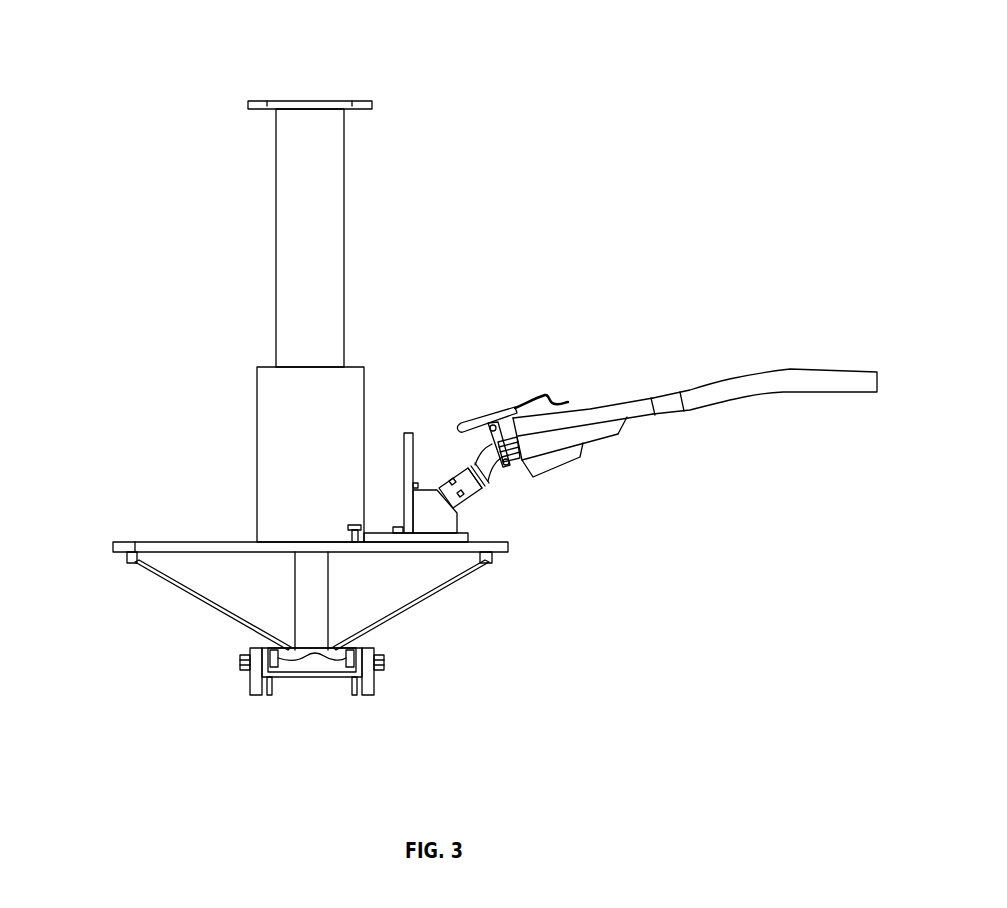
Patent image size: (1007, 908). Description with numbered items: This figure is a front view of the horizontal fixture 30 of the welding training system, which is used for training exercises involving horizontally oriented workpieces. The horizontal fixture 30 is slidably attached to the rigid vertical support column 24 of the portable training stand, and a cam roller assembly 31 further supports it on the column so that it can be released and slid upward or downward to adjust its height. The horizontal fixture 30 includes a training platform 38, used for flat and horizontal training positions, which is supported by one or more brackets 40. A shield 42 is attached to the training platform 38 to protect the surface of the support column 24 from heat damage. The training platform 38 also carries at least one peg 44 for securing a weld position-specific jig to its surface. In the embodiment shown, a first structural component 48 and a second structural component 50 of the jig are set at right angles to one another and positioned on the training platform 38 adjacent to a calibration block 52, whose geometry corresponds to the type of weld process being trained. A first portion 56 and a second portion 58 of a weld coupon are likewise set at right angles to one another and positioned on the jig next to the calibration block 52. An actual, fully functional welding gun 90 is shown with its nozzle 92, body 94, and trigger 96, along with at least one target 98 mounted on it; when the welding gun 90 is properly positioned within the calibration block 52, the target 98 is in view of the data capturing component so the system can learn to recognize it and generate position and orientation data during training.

The vertical support column 24 is at (344, 185).
The horizontal fixture 30 is at (202, 503).
The cam roller assembly 31 is at (373, 687).
The training platform 38 is at (120, 553).
The bracket 40 is at (205, 602).
The shield 42 is at (364, 380).
The peg 44 is at (360, 553).
The first structural component 48 is at (468, 542).
The second structural component 50 is at (410, 433).
The calibration block 52 is at (458, 522).
The first portion of weld coupon 56 is at (406, 534).
The second portion of weld coupon 58 is at (428, 484).
The welding gun 90 is at (620, 352).
The nozzle 92 is at (473, 483).
The body 94 is at (620, 438).
The trigger 96 is at (568, 470).
The target 98 is at (505, 402).